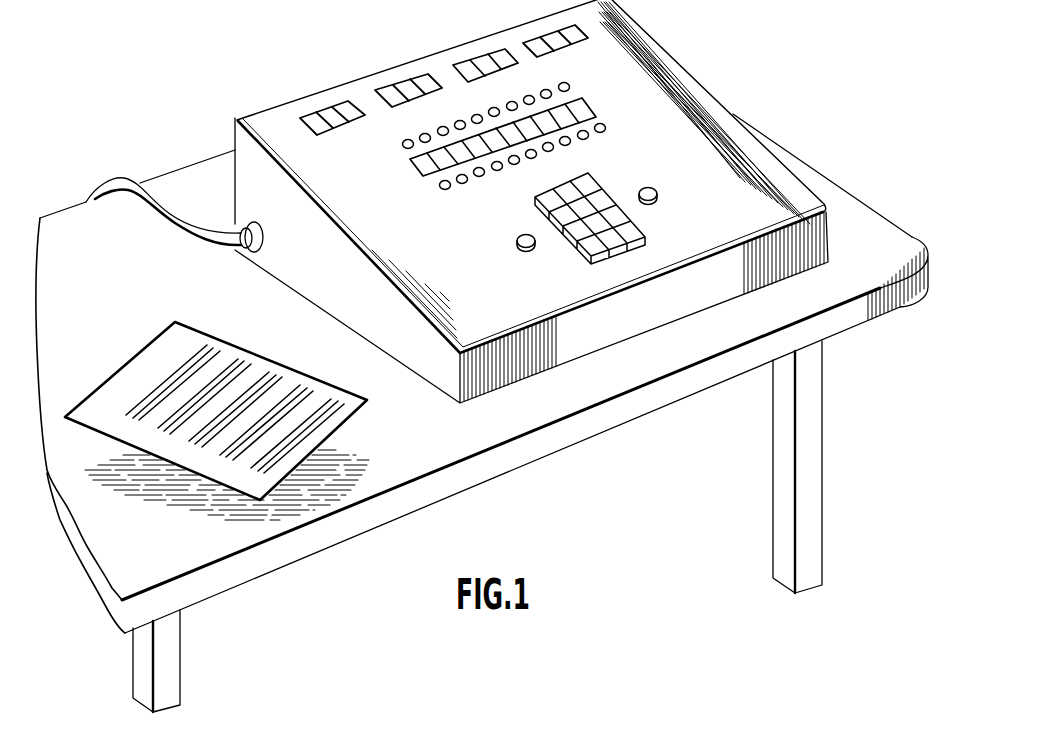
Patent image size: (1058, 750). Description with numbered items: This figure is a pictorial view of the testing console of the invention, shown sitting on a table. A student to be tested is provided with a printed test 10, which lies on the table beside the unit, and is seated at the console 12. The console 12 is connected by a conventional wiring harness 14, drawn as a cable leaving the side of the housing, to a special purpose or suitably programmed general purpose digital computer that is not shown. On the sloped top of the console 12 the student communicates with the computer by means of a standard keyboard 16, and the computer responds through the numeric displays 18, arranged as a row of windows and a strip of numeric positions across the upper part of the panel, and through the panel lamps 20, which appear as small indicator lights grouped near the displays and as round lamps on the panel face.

The printed test 10 is at (229, 343).
The console 12 is at (363, 82).
The wiring harness 14 is at (182, 228).
The keyboard 16 is at (598, 182).
The numeric displays 18 is at (537, 40).
The panel lamps 20 is at (440, 186).